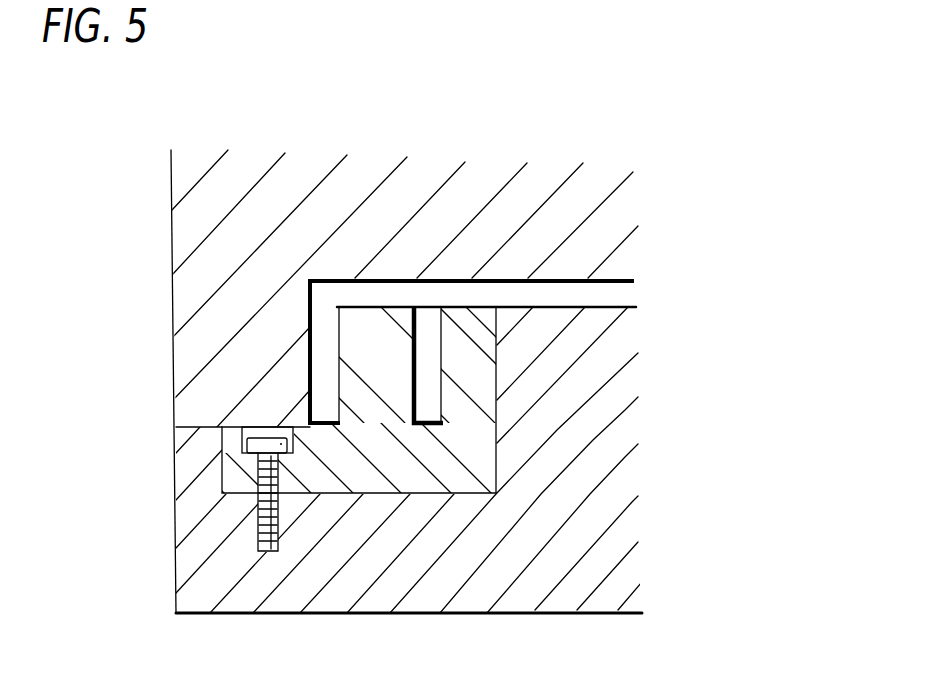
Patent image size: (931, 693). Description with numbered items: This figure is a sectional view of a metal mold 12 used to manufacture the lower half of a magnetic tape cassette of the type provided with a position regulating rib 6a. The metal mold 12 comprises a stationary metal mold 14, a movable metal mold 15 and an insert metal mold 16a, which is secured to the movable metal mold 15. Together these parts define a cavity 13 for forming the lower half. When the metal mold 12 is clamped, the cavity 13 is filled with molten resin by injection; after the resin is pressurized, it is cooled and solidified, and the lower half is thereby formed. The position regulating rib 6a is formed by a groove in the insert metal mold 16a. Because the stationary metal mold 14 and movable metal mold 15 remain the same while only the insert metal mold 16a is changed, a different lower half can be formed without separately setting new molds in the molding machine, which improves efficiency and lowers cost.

The metal mold 12 is at (641, 196).
The cavity 13 is at (600, 291).
The stationary metal mold 14 is at (413, 188).
The movable metal mold 15 is at (486, 614).
The position regulating rib 6a is at (441, 370).
The insert metal mold 16a is at (483, 418).